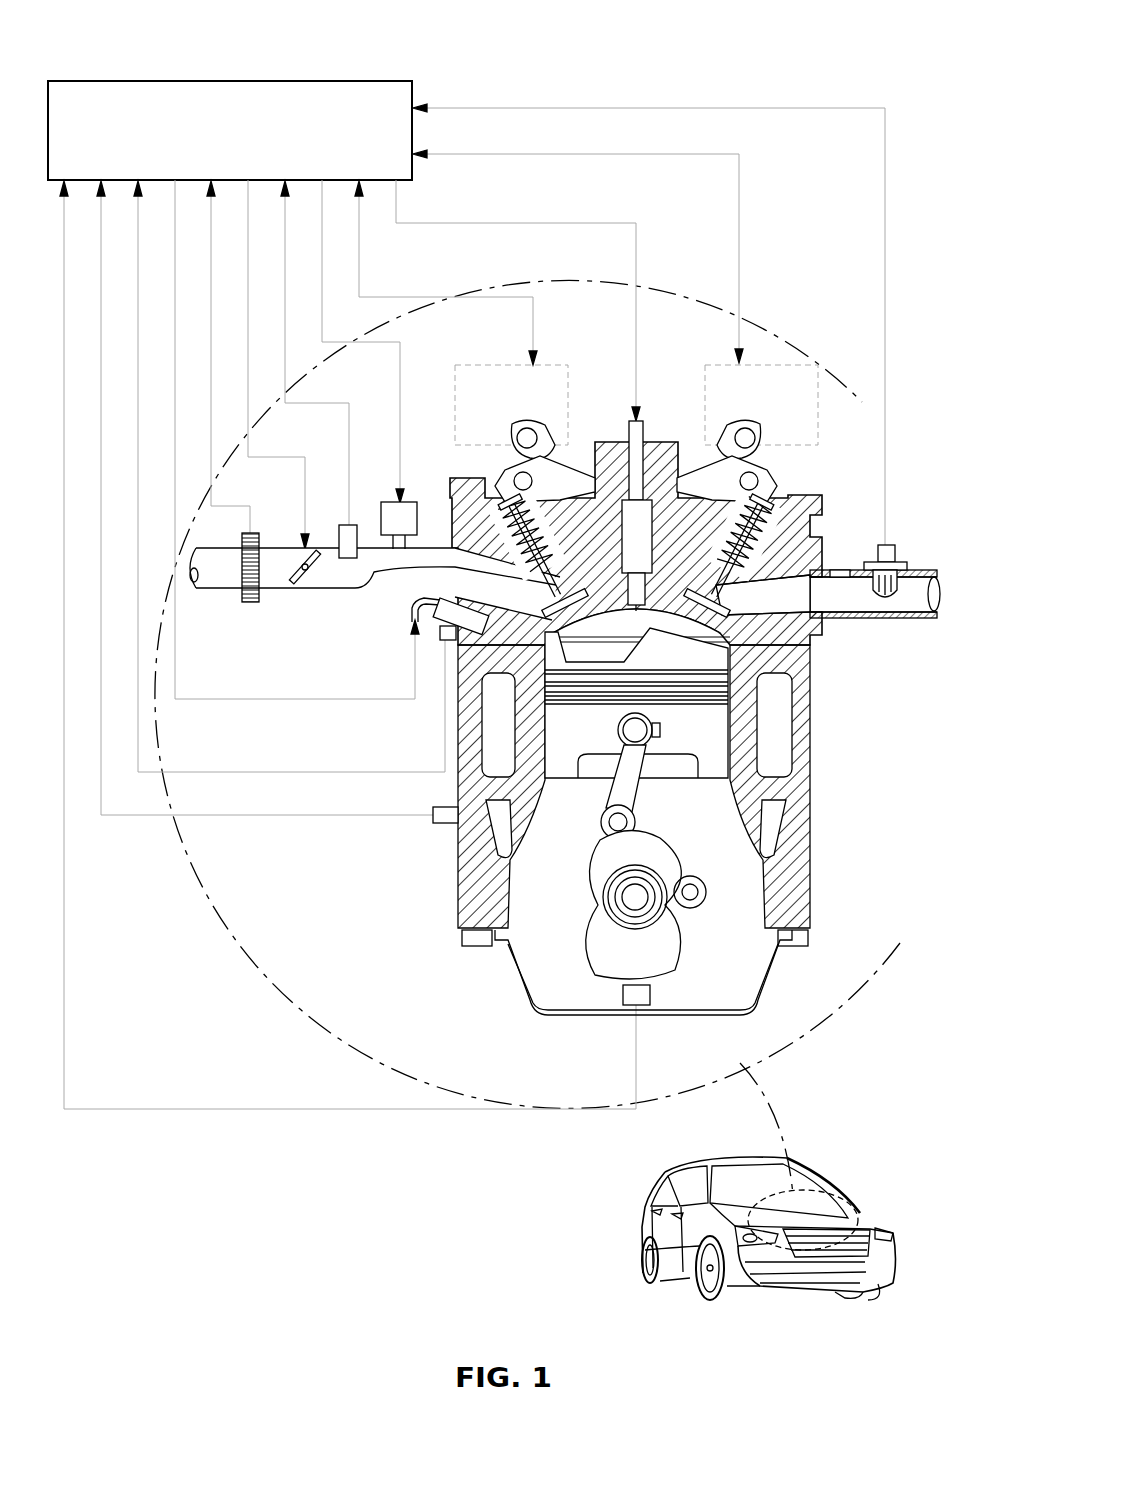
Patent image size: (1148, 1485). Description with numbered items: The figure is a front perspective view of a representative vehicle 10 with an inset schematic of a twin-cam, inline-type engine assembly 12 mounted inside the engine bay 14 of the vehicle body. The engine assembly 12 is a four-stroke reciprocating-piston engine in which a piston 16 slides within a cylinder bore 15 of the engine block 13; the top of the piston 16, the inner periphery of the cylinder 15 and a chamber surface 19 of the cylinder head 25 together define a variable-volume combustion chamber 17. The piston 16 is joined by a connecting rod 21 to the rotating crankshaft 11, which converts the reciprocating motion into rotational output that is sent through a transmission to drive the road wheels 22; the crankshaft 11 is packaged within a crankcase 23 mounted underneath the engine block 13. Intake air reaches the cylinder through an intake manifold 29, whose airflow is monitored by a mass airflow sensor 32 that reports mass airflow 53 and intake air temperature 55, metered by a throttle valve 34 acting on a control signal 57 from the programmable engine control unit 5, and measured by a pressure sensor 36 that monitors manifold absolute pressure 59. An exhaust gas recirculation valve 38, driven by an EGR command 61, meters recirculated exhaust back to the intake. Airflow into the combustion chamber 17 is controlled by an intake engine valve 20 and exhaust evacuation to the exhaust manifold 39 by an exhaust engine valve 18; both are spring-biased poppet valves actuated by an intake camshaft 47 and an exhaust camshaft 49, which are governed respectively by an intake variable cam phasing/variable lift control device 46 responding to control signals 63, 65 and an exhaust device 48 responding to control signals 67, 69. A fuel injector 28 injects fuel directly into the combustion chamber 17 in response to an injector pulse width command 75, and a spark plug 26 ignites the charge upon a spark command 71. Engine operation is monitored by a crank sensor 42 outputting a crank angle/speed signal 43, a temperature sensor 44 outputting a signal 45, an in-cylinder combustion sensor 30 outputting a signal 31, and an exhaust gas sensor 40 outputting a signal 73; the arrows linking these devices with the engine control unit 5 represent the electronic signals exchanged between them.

The programmable engine control unit 5 is at (238, 147).
The vehicle 10 is at (840, 1130).
The crankshaft 11 is at (665, 958).
The engine assembly 12 is at (168, 52).
The engine block 13 is at (790, 897).
The engine bay 14 is at (858, 1218).
The cylinder bore 15 is at (712, 688).
The piston 16 is at (712, 713).
The combustion chamber 17 is at (613, 646).
The exhaust engine valve 18 is at (838, 612).
The chamber surface 19 is at (718, 655).
The intake engine valve 20 is at (392, 584).
The connecting rod 21 is at (700, 820).
The road wheel 22 is at (642, 1270).
The crankcase 23 is at (548, 1017).
The cylinder head 25 is at (812, 535).
The spark plug 26 is at (648, 420).
The fuel injector 28 is at (400, 605).
The intake manifold 29 is at (437, 623).
The in-cylinder combustion sensor 30 is at (432, 650).
The combustion sensor signal 31 is at (305, 764).
The mass airflow sensor 32 is at (262, 600).
The throttle valve 34 is at (308, 580).
The pressure sensor 36 is at (339, 533).
The exhaust gas recirculation valve 38 is at (381, 510).
The exhaust manifold 39 is at (840, 570).
The exhaust gas sensor 40 is at (895, 565).
The crank sensor 42 is at (650, 1002).
The crank angle/speed signal 43 is at (313, 1101).
The temperature sensor 44 is at (443, 825).
The temperature signal 45 is at (361, 811).
The intake variable cam phasing/variable lift control device 46 is at (513, 402).
The intake camshaft 47 is at (505, 436).
The exhaust variable cam phasing/variable lift control device 48 is at (790, 402).
The exhaust camshaft 49 is at (770, 436).
The mass airflow signal 53 is at (248, 357).
The intake air temperature signal 55 is at (290, 501).
The throttle control signal 57 is at (311, 450).
The manifold absolute pressure signal 59 is at (358, 396).
The EGR command 61 is at (438, 336).
The intake valve lift control signal 63 is at (446, 273).
The intake cam phasing control signal 65 is at (487, 290).
The exhaust valve lift control signal 67 is at (581, 240).
The exhaust cam phasing control signal 69 is at (749, 147).
The spark command 71 is at (630, 215).
The exhaust gas sensor signal 73 is at (871, 102).
The injector pulse width command 75 is at (255, 695).